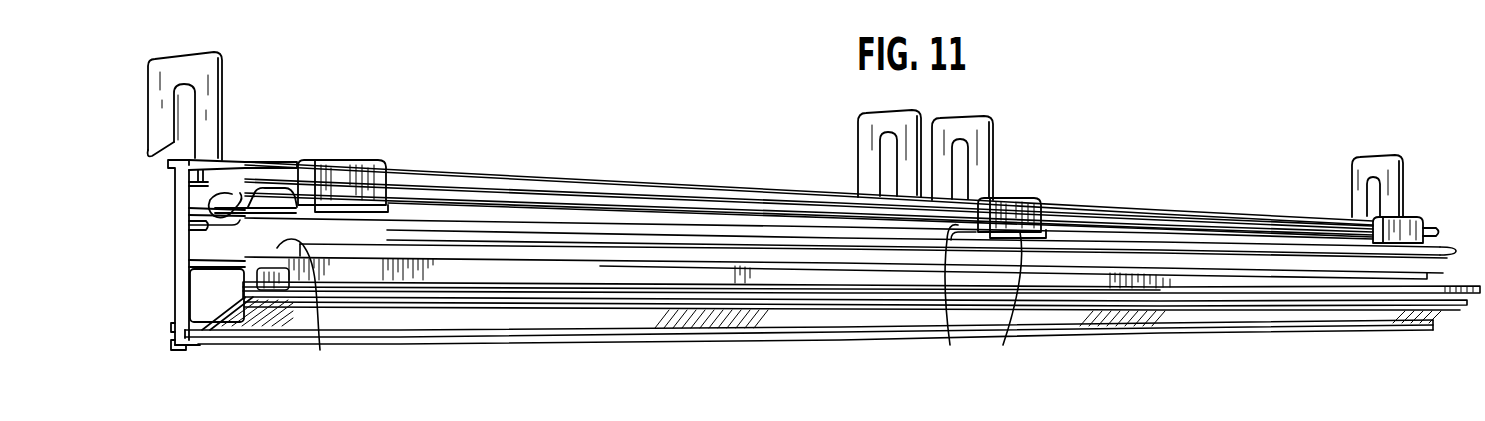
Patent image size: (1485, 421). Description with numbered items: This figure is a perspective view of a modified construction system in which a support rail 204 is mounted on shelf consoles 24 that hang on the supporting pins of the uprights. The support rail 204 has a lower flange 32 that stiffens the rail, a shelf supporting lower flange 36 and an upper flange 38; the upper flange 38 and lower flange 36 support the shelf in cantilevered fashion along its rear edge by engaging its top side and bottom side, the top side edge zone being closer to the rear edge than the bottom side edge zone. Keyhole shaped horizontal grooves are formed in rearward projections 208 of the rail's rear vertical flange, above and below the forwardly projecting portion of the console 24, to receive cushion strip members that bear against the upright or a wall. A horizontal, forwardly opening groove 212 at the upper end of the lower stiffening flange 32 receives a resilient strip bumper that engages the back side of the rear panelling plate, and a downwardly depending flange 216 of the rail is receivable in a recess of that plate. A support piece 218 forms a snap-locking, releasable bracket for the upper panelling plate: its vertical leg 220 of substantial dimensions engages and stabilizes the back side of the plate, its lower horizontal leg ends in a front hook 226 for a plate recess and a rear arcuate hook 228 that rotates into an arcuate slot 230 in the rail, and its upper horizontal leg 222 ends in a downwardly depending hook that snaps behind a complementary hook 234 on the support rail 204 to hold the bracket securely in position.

The shelf console 24 is at (207, 74).
The lower flange 32 is at (540, 320).
The shelf supporting lower flange 36 is at (264, 311).
The upper flange 38 is at (226, 224).
The support rail 204 is at (588, 177).
The rearward projection 208 is at (173, 180).
The forwardly opening groove 212 is at (423, 320).
The downwardly depending flange 216 is at (645, 277).
The support piece 218 is at (340, 155).
The vertical leg 220 is at (1028, 208).
The upper horizontal leg 222 is at (273, 158).
The hook 226 is at (1007, 344).
The arcuate hook 228 is at (950, 342).
The arcuate slot 230 is at (233, 194).
The complementary hook 234 is at (680, 192).